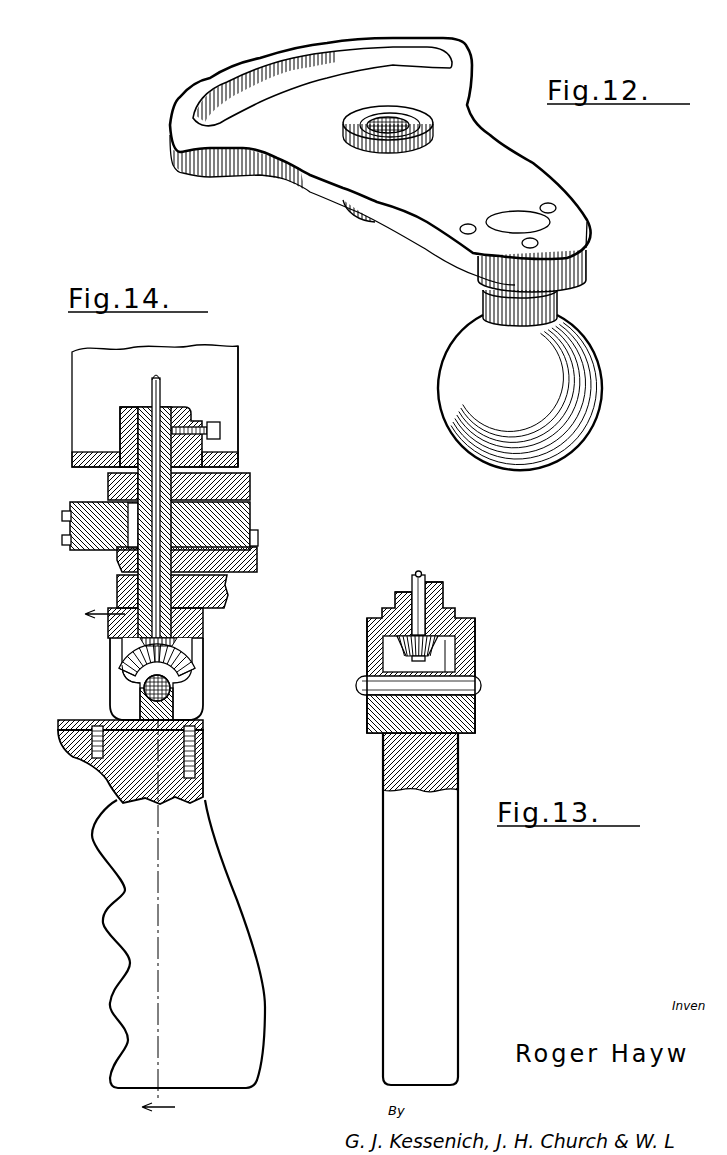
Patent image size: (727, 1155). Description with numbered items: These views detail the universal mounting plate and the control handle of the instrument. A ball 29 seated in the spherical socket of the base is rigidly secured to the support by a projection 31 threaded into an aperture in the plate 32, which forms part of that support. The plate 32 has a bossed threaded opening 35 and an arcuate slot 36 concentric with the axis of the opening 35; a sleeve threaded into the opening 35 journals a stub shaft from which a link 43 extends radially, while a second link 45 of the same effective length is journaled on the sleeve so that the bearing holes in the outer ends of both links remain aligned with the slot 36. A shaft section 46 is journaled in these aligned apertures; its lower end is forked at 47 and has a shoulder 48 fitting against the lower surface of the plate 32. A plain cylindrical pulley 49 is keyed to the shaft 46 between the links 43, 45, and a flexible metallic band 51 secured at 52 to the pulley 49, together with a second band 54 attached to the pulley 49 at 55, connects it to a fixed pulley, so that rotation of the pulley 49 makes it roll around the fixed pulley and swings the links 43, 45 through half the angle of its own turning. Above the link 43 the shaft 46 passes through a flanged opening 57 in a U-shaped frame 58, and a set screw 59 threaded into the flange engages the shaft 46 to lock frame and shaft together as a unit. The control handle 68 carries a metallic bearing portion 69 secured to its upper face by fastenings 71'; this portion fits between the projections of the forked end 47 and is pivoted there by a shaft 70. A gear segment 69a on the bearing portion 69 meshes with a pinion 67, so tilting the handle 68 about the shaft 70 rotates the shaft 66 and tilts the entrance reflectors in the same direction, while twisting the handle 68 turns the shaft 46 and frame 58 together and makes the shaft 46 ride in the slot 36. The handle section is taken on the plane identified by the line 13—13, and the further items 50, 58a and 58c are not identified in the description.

In FIG. 14, the section line 13 is at (120, 871).
In FIG. 12, the ball 29 is at (600, 382).
In FIG. 12, the projection 31 is at (502, 217).
In FIG. 12, the plate 32 is at (532, 175).
In FIG. 14, the plate 32 is at (226, 594).
In FIG. 12, the bossed threaded opening 35 is at (405, 115).
In FIG. 12, the slot 36 is at (218, 123).
In FIG. 14, the slot 36 is at (118, 592).
In FIG. 14, the link 43 is at (252, 483).
In FIG. 14, the second link 45 is at (257, 556).
In FIG. 14, the shaft section 46 is at (140, 405).
In FIG. 13, the shaft section 46 is at (438, 594).
In FIG. 14, the forked lower end 47 is at (197, 685).
In FIG. 13, the forked lower end 47 is at (375, 725).
In FIG. 14, the shoulder 48 is at (196, 618).
In FIG. 13, the shoulder 48 is at (388, 608).
In FIG. 14, the pulley 49 is at (92, 506).
In FIG. 14, the bushing 50 is at (124, 546).
In FIG. 14, the flexible metallic band 51 is at (252, 516).
In FIG. 14, the attachment point 52 is at (62, 516).
In FIG. 14, the second flexible metallic band 54 is at (258, 538).
In FIG. 14, the attachment point 55 is at (62, 540).
In FIG. 14, the flanged opening 57 is at (134, 435).
In FIG. 14, the U-shaped frame 58 is at (64, 396).
In FIG. 14, the bottom wall of housing 58a is at (240, 460).
In FIG. 14, the side wall of housing 58c is at (236, 370).
In FIG. 14, the set screw 59 is at (212, 420).
In FIG. 14, the shaft 66 is at (162, 386).
In FIG. 13, the shaft 66 is at (424, 578).
In FIG. 14, the pinion 67 is at (177, 645).
In FIG. 13, the pinion 67 is at (400, 648).
In FIG. 14, the control handle 68 is at (232, 926).
In FIG. 13, the control handle 68 is at (446, 903).
In FIG. 14, the metallic bearing portion 69 is at (73, 723).
In FIG. 13, the metallic bearing portion 69 is at (445, 712).
In FIG. 14, the gear segment 69a is at (125, 662).
In FIG. 13, the gear segment 69a is at (456, 650).
In FIG. 14, the shaft 70 is at (150, 692).
In FIG. 13, the shaft 70 is at (370, 688).
In FIG. 14, the fastenings 71' is at (141, 765).